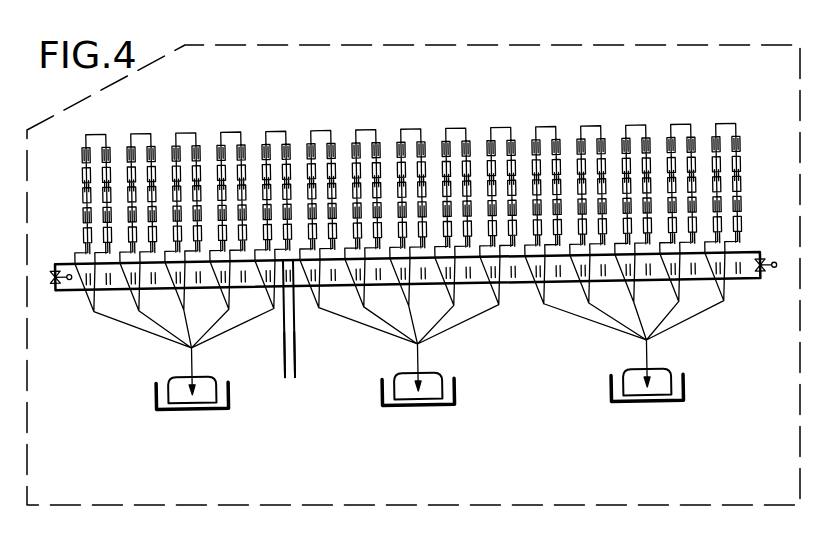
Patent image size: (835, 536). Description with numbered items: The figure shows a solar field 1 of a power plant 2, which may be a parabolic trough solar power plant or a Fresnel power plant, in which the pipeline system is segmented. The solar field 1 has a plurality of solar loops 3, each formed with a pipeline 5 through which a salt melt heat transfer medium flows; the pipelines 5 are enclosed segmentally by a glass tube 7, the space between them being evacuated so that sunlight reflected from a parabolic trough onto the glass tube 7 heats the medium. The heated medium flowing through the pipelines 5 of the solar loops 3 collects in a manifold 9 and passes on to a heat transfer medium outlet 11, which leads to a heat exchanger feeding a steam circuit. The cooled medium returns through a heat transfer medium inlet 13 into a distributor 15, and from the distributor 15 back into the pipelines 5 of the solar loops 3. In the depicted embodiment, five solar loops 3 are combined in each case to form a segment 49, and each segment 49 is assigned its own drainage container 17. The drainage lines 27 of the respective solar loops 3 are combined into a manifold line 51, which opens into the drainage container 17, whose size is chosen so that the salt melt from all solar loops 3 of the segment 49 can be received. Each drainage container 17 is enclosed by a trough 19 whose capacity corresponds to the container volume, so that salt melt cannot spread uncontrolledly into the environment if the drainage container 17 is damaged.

The solar field 1 is at (168, 103).
The power plant 2 is at (676, 38).
The solar loop 3 is at (280, 134).
The pipeline 5 is at (447, 133).
The glass tube 7 is at (530, 160).
The segment 49 is at (741, 109).
The manifold 9 is at (752, 257).
The distributor 15 is at (742, 286).
The heat transfer medium inlet 13 is at (282, 365).
The heat transfer medium outlet 11 is at (303, 356).
The drainage line 27 is at (540, 347).
The manifold line 51 is at (372, 328).
The drainage container 17 is at (232, 373).
The trough 19 is at (188, 406).